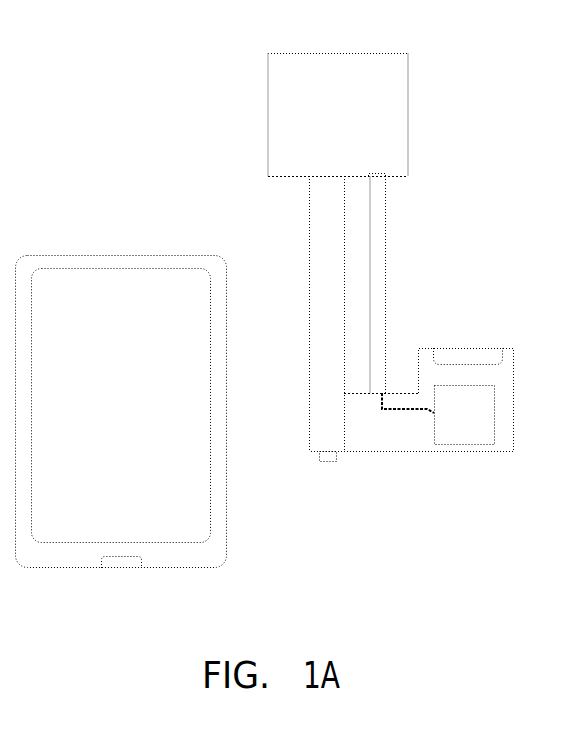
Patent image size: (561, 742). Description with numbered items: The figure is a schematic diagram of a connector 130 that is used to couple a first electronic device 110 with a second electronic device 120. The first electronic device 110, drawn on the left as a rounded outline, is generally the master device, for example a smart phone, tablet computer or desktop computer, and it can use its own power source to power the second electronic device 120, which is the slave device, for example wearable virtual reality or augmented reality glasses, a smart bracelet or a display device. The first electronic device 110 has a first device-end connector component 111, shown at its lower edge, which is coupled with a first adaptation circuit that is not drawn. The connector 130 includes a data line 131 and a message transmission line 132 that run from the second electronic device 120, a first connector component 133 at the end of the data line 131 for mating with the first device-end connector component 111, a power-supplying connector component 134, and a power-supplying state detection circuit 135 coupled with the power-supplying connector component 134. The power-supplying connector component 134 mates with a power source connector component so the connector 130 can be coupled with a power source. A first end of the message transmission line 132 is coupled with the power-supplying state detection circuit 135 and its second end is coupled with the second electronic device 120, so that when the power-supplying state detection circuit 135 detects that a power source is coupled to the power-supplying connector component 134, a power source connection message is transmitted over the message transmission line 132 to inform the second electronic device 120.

The first electronic device 110 is at (133, 351).
The first device-end connector component 111 is at (127, 566).
The second electronic device 120 is at (352, 118).
The connector 130 is at (468, 217).
The data line 131 is at (307, 287).
The message transmission line 132 is at (387, 290).
The first connector component 133 is at (325, 462).
The power-supplying connector component 134 is at (470, 347).
The power-supplying state detection circuit 135 is at (479, 420).